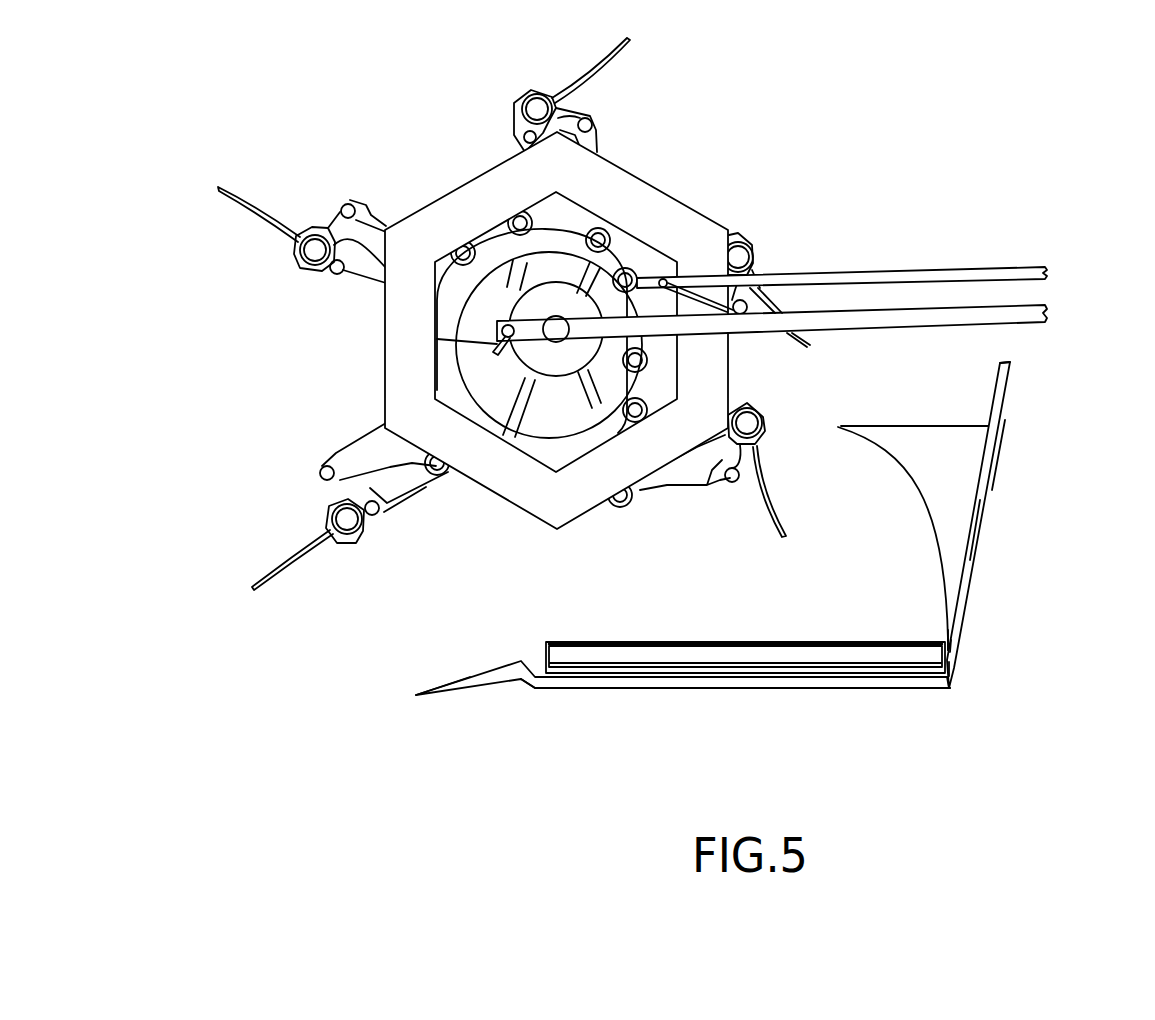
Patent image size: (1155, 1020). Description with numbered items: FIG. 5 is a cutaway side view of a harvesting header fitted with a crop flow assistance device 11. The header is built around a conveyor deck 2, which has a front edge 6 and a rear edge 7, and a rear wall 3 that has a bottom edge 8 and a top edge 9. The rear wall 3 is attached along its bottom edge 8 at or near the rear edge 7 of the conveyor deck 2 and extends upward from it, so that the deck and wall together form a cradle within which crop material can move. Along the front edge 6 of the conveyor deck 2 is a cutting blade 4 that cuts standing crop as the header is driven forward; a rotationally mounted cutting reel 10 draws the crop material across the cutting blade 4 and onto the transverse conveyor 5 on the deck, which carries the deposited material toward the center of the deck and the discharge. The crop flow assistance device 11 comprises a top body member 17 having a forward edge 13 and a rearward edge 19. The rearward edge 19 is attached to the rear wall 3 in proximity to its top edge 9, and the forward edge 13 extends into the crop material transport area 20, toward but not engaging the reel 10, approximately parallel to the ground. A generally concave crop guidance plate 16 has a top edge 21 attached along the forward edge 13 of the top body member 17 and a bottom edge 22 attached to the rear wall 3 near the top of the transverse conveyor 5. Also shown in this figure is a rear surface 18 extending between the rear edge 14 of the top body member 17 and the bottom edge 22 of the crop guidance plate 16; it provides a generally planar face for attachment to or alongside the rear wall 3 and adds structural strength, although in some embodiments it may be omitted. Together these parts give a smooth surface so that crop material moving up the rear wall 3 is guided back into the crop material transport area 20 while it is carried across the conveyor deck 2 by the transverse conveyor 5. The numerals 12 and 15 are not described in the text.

The conveyor deck 2 is at (692, 690).
The rear wall 3 is at (997, 460).
The cutting blade 4 is at (437, 688).
The transverse conveyor 5 is at (750, 657).
The front edge 6 is at (532, 693).
The rear edge 7 is at (957, 695).
The bottom edge 8 is at (957, 692).
The top edge 9 is at (1013, 360).
The cutting reel 10 is at (365, 143).
The crop flow assistance device 11 is at (943, 408).
The cutting edge 12 is at (953, 668).
The forward edge 13 is at (841, 420).
The rear edge 14 is at (986, 418).
The blade tip 15 is at (955, 645).
The crop guidance plate 16 is at (935, 527).
The top body member 17 is at (898, 420).
The rear surface 18 is at (975, 533).
The rearward edge 19 is at (990, 423).
The crop material transport area 20 is at (777, 588).
The top edge 21 is at (838, 427).
The bottom edge 22 is at (942, 632).